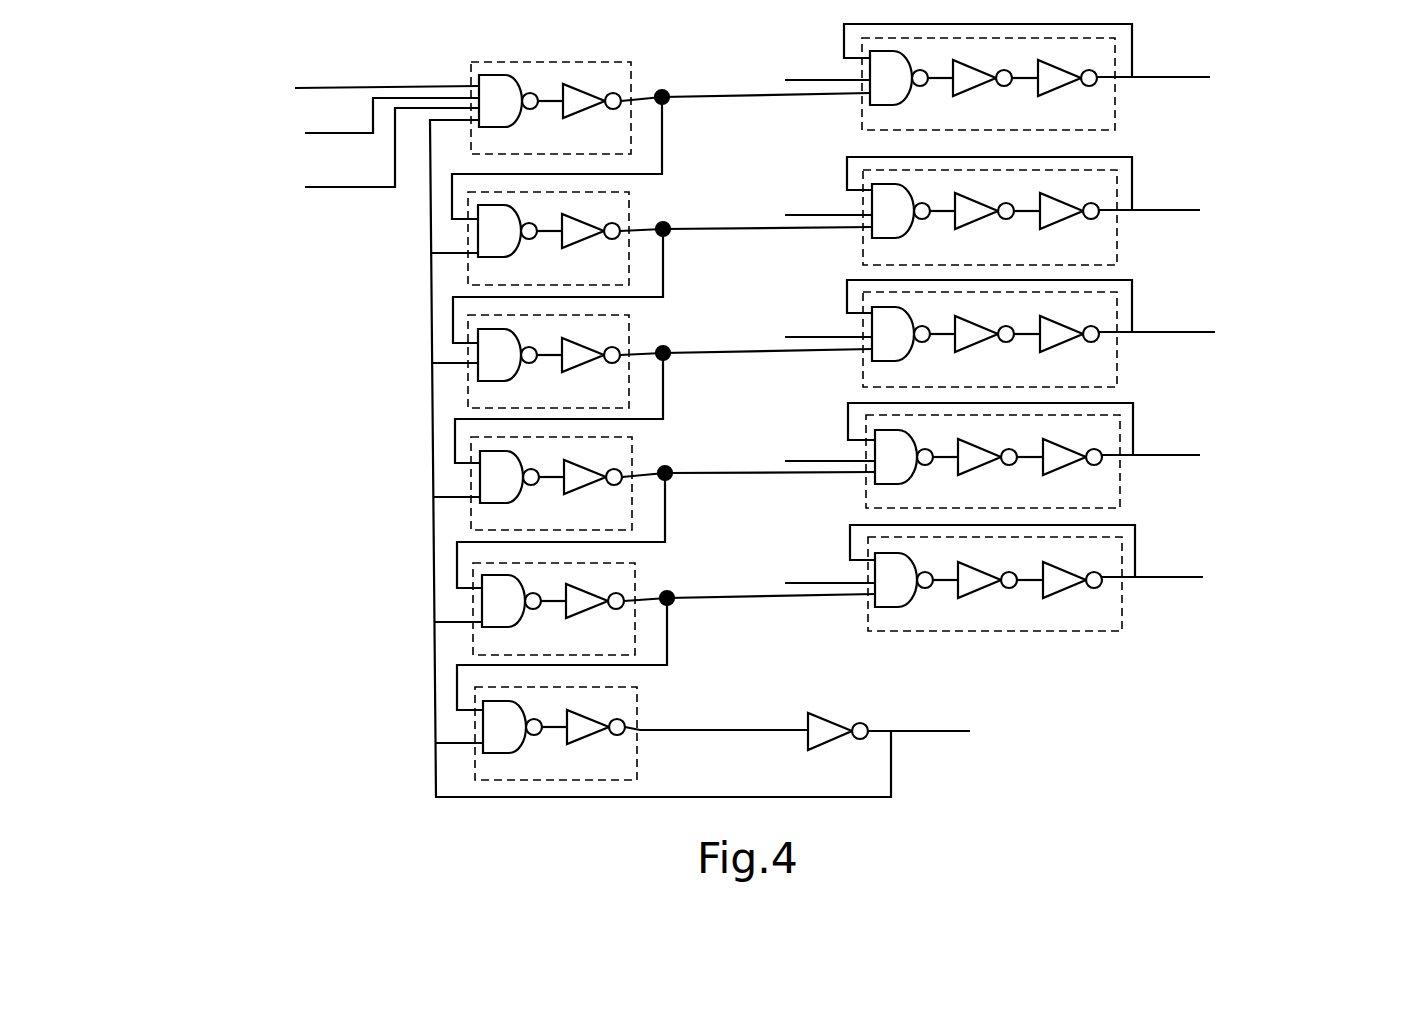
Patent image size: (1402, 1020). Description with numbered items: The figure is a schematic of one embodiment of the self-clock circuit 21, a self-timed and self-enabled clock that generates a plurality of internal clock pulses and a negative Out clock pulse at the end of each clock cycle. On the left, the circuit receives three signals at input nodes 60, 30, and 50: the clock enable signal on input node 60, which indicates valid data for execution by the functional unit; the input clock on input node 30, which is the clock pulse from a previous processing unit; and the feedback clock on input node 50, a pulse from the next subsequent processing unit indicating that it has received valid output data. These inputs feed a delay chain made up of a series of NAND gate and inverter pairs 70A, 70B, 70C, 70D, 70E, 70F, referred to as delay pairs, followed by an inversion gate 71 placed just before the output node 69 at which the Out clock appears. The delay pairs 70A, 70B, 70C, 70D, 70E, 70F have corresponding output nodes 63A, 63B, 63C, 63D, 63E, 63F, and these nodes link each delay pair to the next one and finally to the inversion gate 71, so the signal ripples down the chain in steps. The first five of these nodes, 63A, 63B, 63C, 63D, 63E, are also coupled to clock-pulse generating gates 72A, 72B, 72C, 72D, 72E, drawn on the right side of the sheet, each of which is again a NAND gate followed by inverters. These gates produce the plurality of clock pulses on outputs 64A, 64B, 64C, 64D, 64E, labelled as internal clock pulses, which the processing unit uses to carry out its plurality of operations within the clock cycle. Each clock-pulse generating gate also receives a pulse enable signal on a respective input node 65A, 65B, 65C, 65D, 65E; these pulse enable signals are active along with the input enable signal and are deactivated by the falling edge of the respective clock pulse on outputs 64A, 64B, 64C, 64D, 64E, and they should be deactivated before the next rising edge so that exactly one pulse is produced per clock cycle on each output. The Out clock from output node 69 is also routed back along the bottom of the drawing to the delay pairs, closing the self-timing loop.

The self-clock circuit 21 is at (746, 443).
The input node 60 is at (387, 74).
The input node 30 is at (392, 117).
The input node 50 is at (392, 149).
The NAND gate and inverter pair 70A is at (551, 108).
The NAND gate and inverter pair 70B is at (548, 238).
The NAND gate and inverter pair 70C is at (548, 361).
The NAND gate and inverter pair 70D is at (551, 483).
The NAND gate and inverter pair 70E is at (554, 609).
The NAND gate and inverter pair 70F is at (556, 733).
The output node 63A is at (661, 142).
The output node 63B is at (662, 270).
The output node 63C is at (663, 392).
The output node 63D is at (666, 514).
The output node 63E is at (666, 638).
The output node 63F is at (716, 708).
The pulse enable signal input node 65A is at (827, 66).
The pulse enable signal input node 65B is at (828, 197).
The pulse enable signal input node 65C is at (828, 321).
The pulse enable signal input node 65D is at (830, 444).
The pulse enable signal input node 65E is at (830, 566).
The clock-pulse generating gate 72A is at (988, 84).
The clock-pulse generating gate 72B is at (990, 217).
The clock-pulse generating gate 72C is at (990, 339).
The clock-pulse generating gate 72D is at (993, 461).
The clock-pulse generating gate 72E is at (995, 584).
The clock pulse output 64A is at (1027, 53).
The clock pulse output 64B is at (1023, 186).
The clock pulse output 64C is at (1031, 309).
The clock pulse output 64D is at (1024, 431).
The clock pulse output 64E is at (1026, 554).
The inversion gate 71 is at (838, 712).
The output node 69 is at (919, 720).